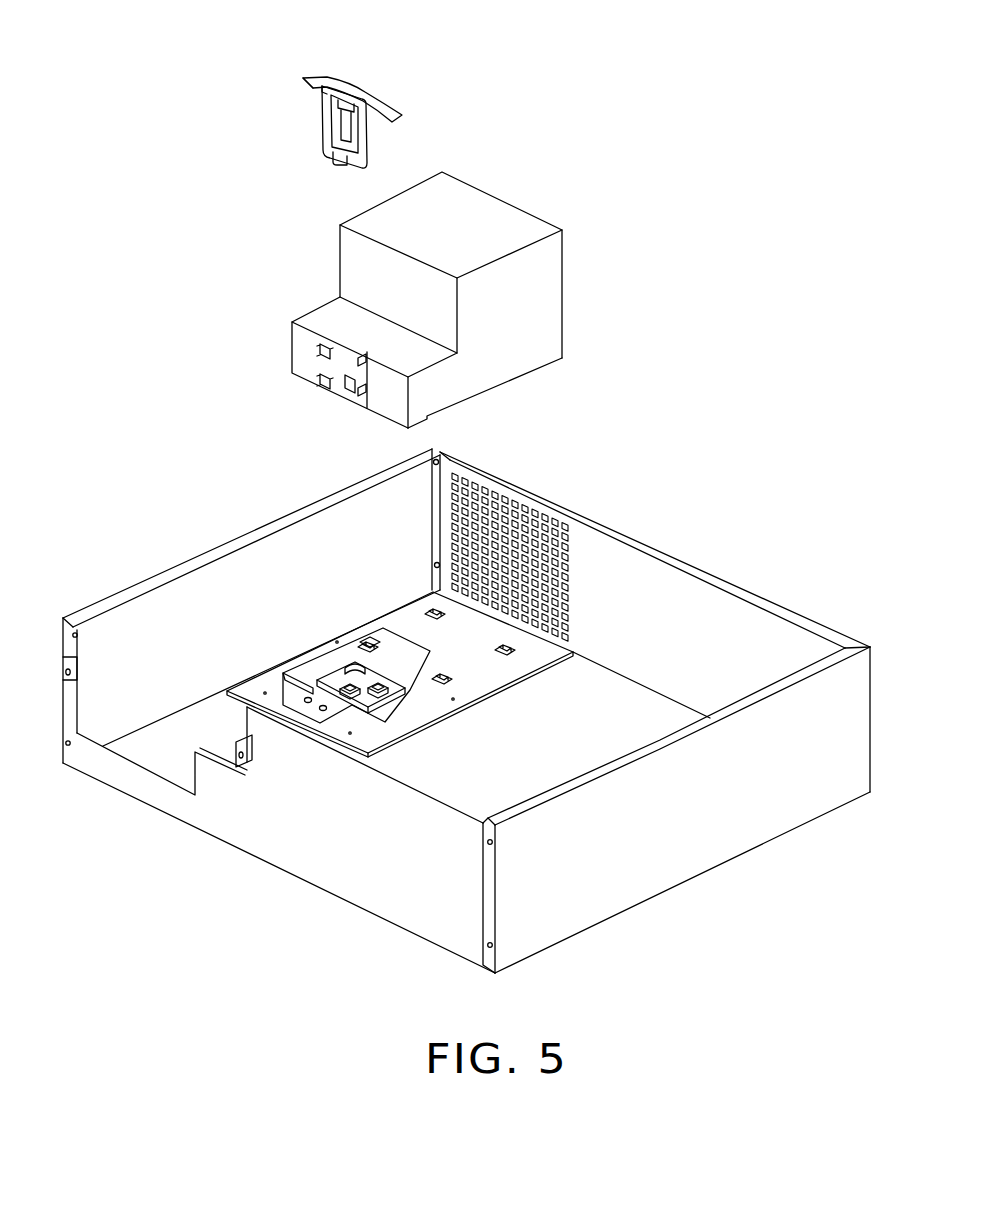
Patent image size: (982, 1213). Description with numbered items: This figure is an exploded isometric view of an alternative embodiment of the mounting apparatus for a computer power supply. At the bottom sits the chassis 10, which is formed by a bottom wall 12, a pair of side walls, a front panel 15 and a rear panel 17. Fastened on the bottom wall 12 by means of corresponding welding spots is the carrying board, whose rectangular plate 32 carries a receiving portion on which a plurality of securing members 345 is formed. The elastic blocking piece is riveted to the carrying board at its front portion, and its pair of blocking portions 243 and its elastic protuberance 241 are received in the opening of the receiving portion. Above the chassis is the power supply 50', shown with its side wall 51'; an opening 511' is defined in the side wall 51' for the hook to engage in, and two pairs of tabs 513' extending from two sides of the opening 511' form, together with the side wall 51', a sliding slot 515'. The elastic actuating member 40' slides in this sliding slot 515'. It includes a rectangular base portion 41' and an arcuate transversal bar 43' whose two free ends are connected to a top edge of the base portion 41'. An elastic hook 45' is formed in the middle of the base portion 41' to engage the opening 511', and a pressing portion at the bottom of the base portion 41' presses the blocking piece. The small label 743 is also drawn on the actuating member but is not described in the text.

The chassis 10 is at (650, 523).
The bottom wall 12 is at (157, 760).
The front panel 15 is at (217, 822).
The rear panel 17 is at (698, 593).
The rectangular plate 32 is at (245, 685).
The protuberance 241 is at (348, 688).
The blocking portions 243 is at (342, 672).
The securing members 345 is at (370, 640).
The elastic actuating member 40' is at (365, 109).
The rectangular base portion 41' is at (385, 127).
The arcuate transversal bar 43' is at (383, 96).
The elastic hook 45' is at (308, 129).
The protrusion 743 is at (338, 160).
The power supply 50' is at (409, 284).
The side wall 51' is at (305, 375).
The opening 511' is at (325, 414).
The tabs 513' is at (279, 389).
The sliding slot 515' is at (297, 332).